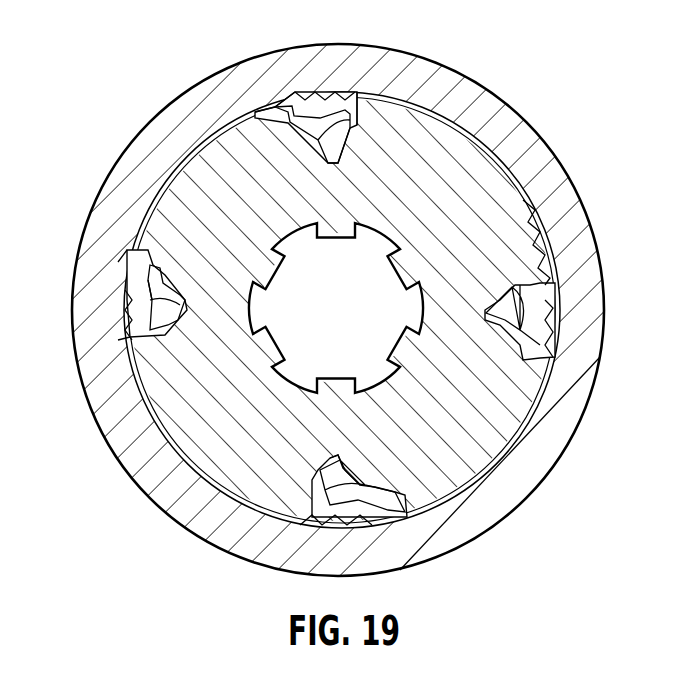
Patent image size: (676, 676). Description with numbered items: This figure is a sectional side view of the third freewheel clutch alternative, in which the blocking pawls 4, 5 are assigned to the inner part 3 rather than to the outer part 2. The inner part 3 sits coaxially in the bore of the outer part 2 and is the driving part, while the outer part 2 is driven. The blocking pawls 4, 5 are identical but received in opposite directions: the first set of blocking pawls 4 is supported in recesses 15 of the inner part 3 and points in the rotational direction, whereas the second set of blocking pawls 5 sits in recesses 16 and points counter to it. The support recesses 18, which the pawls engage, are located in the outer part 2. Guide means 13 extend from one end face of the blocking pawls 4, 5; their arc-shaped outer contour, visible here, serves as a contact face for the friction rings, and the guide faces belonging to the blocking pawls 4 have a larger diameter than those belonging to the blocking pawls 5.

The outer part 2 is at (433, 90).
The inner part 3 is at (470, 173).
The blocking pawl 4 is at (127, 280).
The blocking pawl 5 is at (292, 113).
The guide means 13 is at (333, 137).
The recess 15 is at (150, 293).
The recess 16 is at (358, 100).
The support recess 18 is at (527, 213).